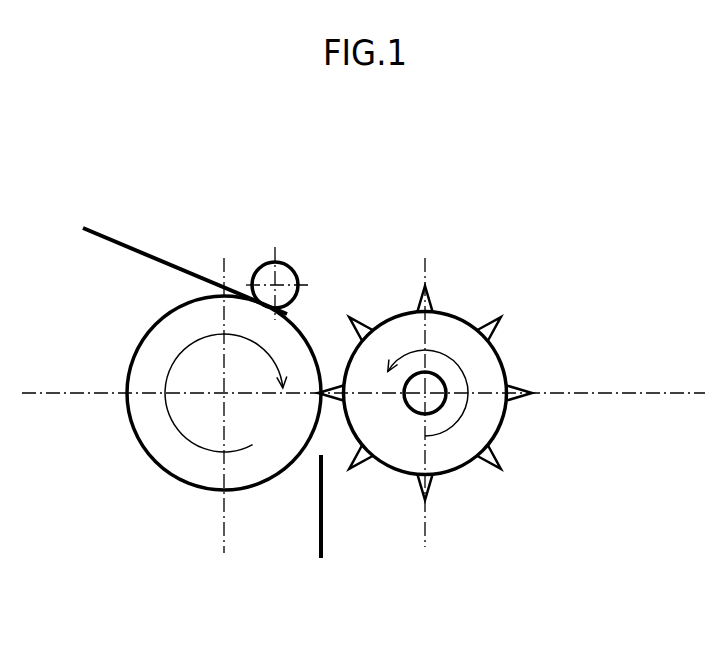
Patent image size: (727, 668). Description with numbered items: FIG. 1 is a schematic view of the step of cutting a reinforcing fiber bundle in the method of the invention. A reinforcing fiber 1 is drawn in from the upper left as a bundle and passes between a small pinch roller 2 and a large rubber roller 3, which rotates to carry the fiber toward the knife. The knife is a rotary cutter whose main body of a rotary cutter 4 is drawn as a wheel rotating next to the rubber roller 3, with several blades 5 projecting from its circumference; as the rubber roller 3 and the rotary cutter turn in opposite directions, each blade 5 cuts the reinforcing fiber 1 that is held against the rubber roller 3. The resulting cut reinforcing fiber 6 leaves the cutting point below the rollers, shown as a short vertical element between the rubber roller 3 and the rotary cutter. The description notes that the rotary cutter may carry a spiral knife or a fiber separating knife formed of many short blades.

The reinforcing fiber 1 is at (125, 240).
The pinch roller 2 is at (283, 268).
The rubber roller 3 is at (168, 447).
The main body of a rotary cutter 4 is at (452, 332).
The blade 5 is at (488, 467).
The cut reinforcing fiber 6 is at (323, 530).